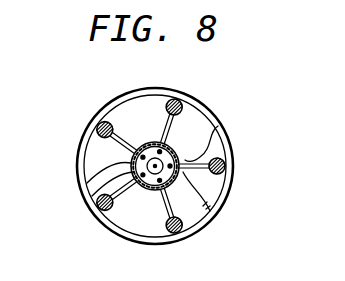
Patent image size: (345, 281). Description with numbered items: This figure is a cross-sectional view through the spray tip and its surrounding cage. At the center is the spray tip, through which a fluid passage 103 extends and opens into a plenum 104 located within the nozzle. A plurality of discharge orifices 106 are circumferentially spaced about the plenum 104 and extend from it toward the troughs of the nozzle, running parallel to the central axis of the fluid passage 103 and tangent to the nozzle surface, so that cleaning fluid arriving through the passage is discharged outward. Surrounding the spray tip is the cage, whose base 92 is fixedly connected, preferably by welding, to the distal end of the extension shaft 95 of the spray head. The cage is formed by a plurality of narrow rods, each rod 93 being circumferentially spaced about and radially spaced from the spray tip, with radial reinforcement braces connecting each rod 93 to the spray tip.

The base 92 is at (132, 117).
The rod 93 is at (177, 100).
The extension shaft 95 is at (213, 127).
The fluid passage 103 is at (113, 171).
The plenum 104 is at (93, 192).
The discharge orifices 106 is at (208, 207).